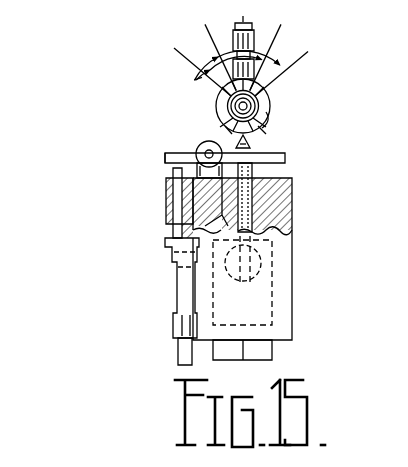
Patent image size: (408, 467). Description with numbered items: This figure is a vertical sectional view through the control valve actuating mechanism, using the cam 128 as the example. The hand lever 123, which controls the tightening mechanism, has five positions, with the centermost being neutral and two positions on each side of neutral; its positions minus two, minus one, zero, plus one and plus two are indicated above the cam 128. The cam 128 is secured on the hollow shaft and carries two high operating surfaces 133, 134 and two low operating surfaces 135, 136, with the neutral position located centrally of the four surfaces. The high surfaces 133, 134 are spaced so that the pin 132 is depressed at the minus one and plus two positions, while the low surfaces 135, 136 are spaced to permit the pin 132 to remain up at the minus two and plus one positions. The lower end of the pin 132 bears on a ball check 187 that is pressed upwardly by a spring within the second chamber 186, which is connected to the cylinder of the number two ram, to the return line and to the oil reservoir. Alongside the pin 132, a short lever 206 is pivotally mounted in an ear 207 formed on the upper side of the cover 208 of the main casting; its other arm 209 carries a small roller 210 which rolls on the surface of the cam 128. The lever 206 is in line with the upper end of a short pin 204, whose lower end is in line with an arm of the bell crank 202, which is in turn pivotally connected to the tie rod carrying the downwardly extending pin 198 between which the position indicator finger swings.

The hand lever 123 is at (186, 86).
The control valve actuating cam 128 is at (268, 102).
The low operating surface 135 is at (221, 99).
The high operating surface 133 is at (228, 130).
The low operating surface 136 is at (270, 116).
The high operating surface 134 is at (268, 128).
The small roller 210 is at (252, 143).
The arm of lever 209 is at (288, 158).
The short lever 206 is at (168, 153).
The ear 207 is at (199, 148).
The cover 208 is at (275, 180).
The pin 132 is at (293, 200).
The ball check 187 is at (262, 263).
The second chamber 186 is at (270, 298).
The short pin 204 is at (175, 231).
The bell crank 202 is at (178, 284).
The pin 198 is at (178, 352).